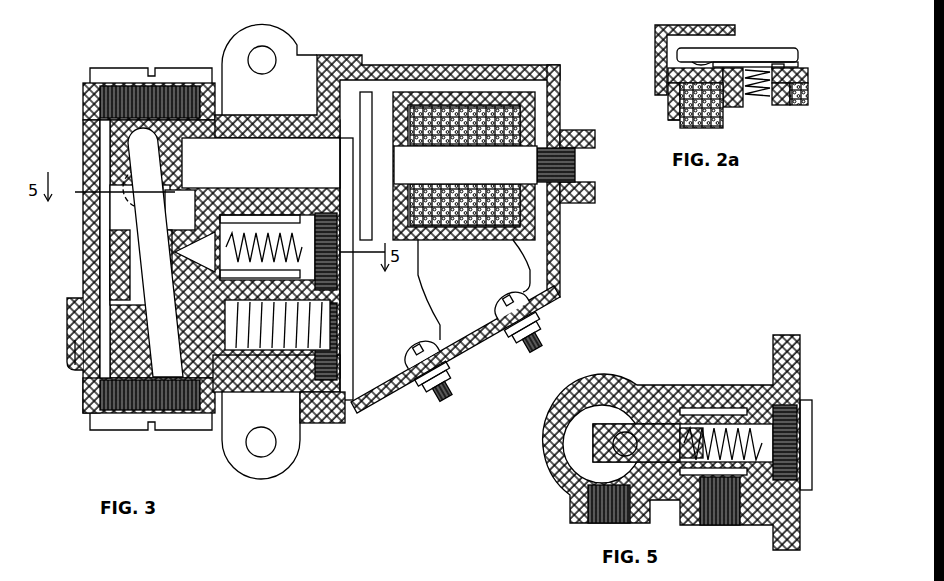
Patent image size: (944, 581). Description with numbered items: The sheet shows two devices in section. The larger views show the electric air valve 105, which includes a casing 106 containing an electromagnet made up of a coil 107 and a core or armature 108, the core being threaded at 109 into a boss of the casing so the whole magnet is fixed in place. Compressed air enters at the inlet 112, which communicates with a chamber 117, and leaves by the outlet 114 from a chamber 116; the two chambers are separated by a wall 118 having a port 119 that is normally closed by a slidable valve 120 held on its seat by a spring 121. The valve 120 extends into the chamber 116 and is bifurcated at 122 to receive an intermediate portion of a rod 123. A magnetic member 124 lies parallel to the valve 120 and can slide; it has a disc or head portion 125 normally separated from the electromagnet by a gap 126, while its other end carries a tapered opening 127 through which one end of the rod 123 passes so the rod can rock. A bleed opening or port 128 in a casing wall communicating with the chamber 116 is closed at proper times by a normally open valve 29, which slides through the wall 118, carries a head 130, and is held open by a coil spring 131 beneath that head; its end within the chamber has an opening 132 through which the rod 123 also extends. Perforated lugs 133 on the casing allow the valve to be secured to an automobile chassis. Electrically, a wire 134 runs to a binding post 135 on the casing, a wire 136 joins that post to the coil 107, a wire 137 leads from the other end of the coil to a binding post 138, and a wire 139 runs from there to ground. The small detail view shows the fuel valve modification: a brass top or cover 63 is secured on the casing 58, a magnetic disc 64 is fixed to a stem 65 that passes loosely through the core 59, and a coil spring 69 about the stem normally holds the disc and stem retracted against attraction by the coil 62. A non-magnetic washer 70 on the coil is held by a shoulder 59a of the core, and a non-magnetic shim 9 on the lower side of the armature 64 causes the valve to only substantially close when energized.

In FIG. 3, the electric air valve 105 is at (405, 52).
In FIG. 5, the electric air valve 105 is at (718, 326).
In FIG. 3, the casing 106 is at (540, 40).
In FIG. 5, the casing 106 is at (767, 376).
In FIG. 3, the coil 107 is at (518, 114).
In FIG. 3, the core or armature 108 is at (465, 165).
In FIG. 3, the threaded portion 109 is at (574, 165).
In FIG. 5, the inlet 112 is at (721, 526).
In FIG. 3, the outlet 114 is at (133, 207).
In FIG. 5, the outlet 114 is at (597, 523).
In FIG. 3, the chamber 116 is at (115, 267).
In FIG. 5, the chamber 116 is at (575, 446).
In FIG. 3, the chamber 117 is at (252, 220).
In FIG. 3, the wall 118 is at (207, 277).
In FIG. 3, the opening or port 119 is at (180, 210).
In FIG. 3, the slidable valve 120 is at (274, 222).
In FIG. 5, the slidable valve 120 is at (708, 414).
In FIG. 3, the spring 121 is at (325, 268).
In FIG. 5, the spring 121 is at (682, 417).
In FIG. 3, the bifurcated portion 122 is at (152, 258).
In FIG. 5, the bifurcated portion 122 is at (600, 434).
In FIG. 3, the rod 123 is at (140, 148).
In FIG. 5, the rod 123 is at (612, 422).
In FIG. 3, the magnetic member 124 is at (257, 148).
In FIG. 3, the disc or head portion 125 is at (367, 93).
In FIG. 3, the gap 126 is at (382, 110).
In FIG. 3, the opening 127 is at (157, 137).
In FIG. 3, the bleed opening or port 128 is at (72, 336).
In FIG. 3, the normally open valve 29 is at (70, 350).
In FIG. 3, the head 130 is at (309, 425).
In FIG. 3, the coil spring 131 is at (300, 327).
In FIG. 3, the opening 132 is at (85, 378).
In FIG. 3, the perforated lugs 133 is at (270, 36).
In FIG. 3, the wire 134 is at (440, 405).
In FIG. 3, the binding post 135 is at (448, 379).
In FIG. 3, the wire 136 is at (427, 296).
In FIG. 3, the wire 137 is at (528, 268).
In FIG. 3, the binding post 138 is at (543, 323).
In FIG. 3, the wire 139 is at (497, 383).
In FIG. 2a, the top or cover 63 is at (655, 40).
In FIG. 2a, the non-magnetic shim 9 is at (698, 60).
In FIG. 2a, the coil spring 69 is at (745, 62).
In FIG. 2a, the disc 64 is at (760, 52).
In FIG. 2a, the shoulder 59a is at (783, 68).
In FIG. 2a, the washer 70 is at (688, 76).
In FIG. 2a, the casing 58 is at (676, 124).
In FIG. 2a, the coil 62 is at (692, 128).
In FIG. 2a, the core 59 is at (736, 108).
In FIG. 2a, the stem 65 is at (765, 108).